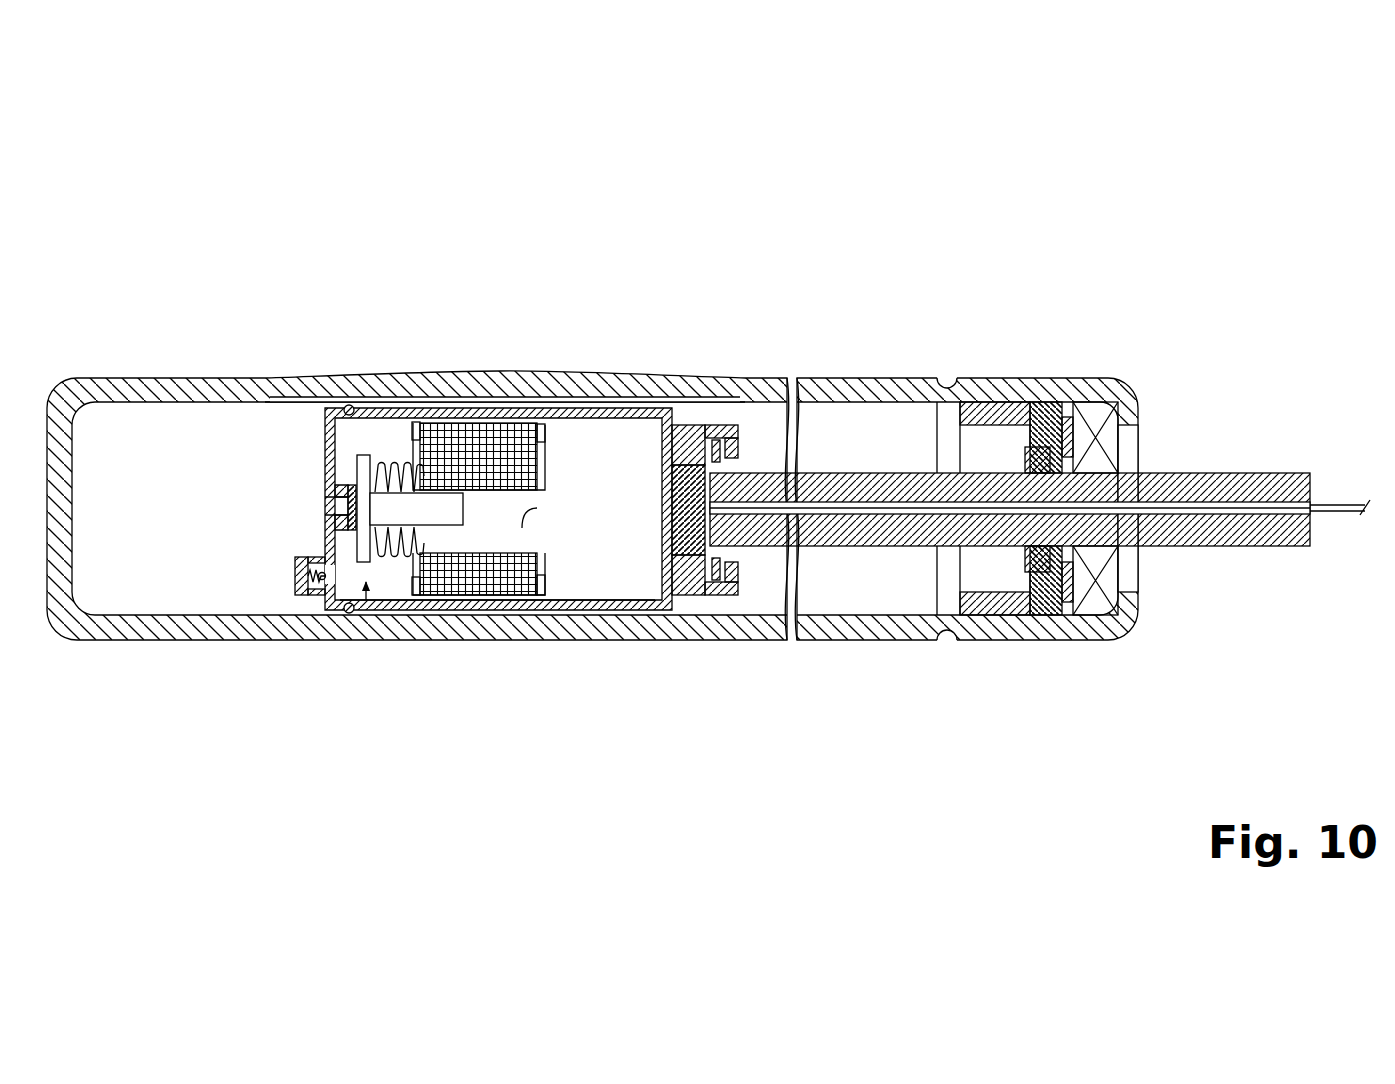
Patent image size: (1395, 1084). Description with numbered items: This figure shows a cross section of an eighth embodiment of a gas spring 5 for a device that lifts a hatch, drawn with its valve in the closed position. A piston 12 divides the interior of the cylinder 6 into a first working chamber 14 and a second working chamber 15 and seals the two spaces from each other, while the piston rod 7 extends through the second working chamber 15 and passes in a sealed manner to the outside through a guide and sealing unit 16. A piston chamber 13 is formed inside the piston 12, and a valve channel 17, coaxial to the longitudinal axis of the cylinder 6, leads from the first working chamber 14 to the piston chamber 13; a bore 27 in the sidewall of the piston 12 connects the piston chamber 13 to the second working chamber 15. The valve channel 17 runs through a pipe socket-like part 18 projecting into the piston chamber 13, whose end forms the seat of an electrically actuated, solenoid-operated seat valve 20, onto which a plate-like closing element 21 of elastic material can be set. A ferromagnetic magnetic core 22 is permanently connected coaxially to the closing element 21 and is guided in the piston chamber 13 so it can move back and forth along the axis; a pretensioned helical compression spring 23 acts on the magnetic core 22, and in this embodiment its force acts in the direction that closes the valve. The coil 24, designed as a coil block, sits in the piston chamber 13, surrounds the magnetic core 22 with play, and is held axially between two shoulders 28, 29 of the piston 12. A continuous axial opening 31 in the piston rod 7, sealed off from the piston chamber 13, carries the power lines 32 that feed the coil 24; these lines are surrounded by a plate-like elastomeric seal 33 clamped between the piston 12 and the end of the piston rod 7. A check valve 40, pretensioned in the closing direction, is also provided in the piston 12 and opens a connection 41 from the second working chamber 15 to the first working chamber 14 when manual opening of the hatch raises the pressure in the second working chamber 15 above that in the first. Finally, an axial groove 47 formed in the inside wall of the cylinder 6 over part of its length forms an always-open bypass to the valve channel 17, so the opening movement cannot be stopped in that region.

The gas spring 5 is at (878, 290).
The cylinder 6 is at (159, 400).
The piston rod 7 is at (1265, 490).
The piston 12 is at (450, 413).
The piston chamber 13 is at (600, 430).
The first working chamber 14 is at (155, 585).
The second working chamber 15 is at (870, 585).
The guide and sealing unit 16 is at (1052, 385).
The valve channel 17 is at (328, 508).
The pipe socket-like part 18 is at (333, 496).
The seat valve 20 is at (364, 602).
The closing element 21 is at (332, 462).
The magnetic core 22 is at (458, 508).
The spring 23 is at (388, 463).
The coil 24 is at (465, 578).
The bore 27 is at (398, 605).
The shoulder 28 is at (415, 430).
The shoulder 29 is at (545, 582).
The axial opening 31 is at (1183, 504).
The power lines 32 is at (1352, 503).
The seal 33 is at (690, 445).
The check valve 40 is at (285, 593).
The connection 41 is at (330, 600).
The axial groove 47 is at (508, 398).